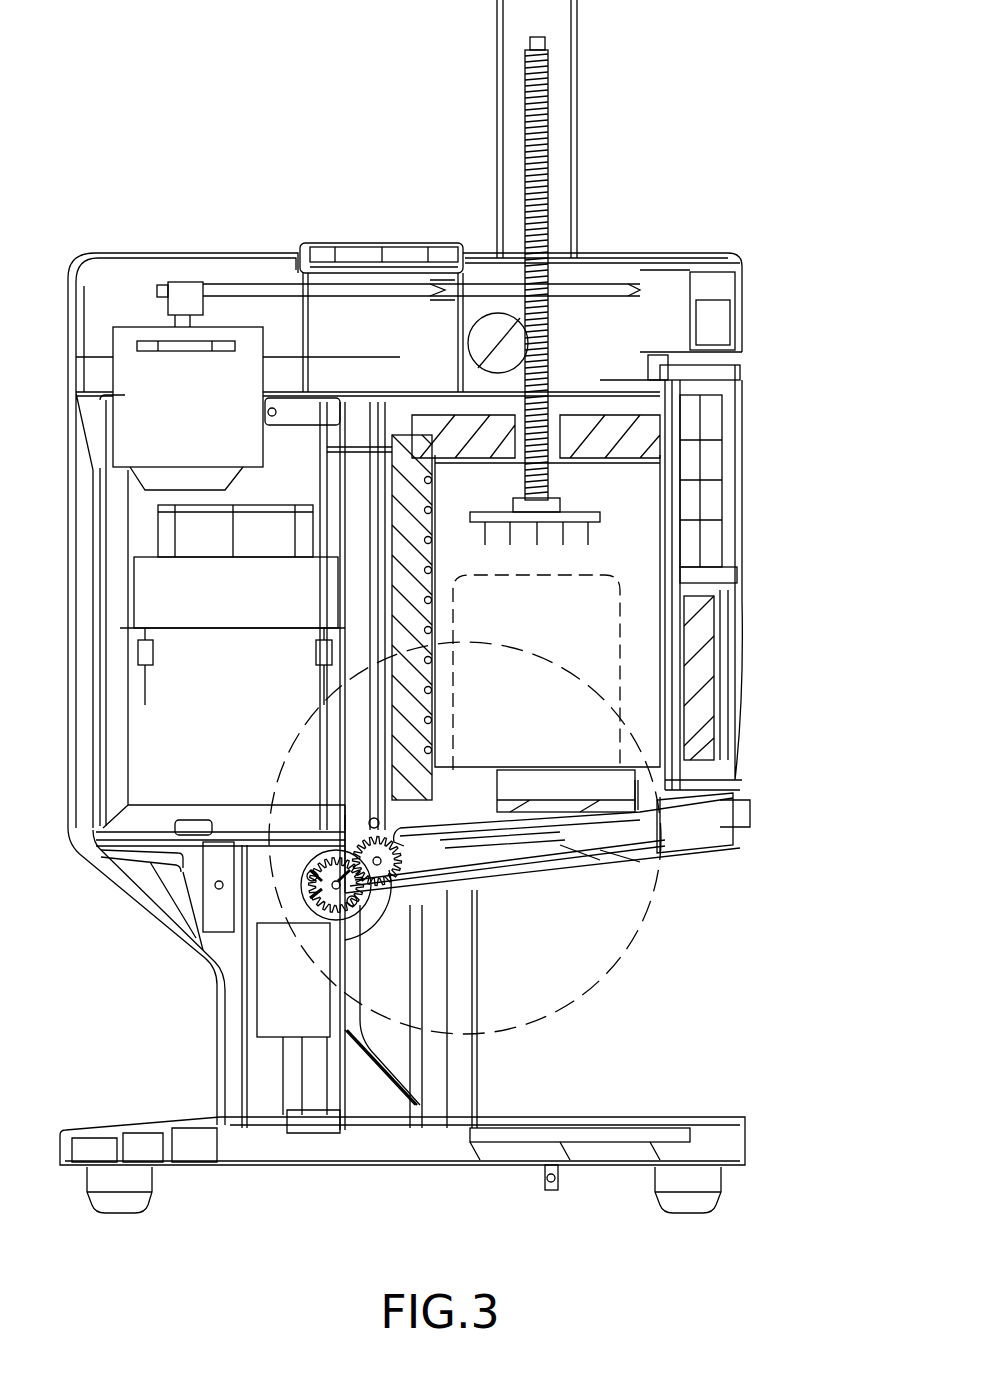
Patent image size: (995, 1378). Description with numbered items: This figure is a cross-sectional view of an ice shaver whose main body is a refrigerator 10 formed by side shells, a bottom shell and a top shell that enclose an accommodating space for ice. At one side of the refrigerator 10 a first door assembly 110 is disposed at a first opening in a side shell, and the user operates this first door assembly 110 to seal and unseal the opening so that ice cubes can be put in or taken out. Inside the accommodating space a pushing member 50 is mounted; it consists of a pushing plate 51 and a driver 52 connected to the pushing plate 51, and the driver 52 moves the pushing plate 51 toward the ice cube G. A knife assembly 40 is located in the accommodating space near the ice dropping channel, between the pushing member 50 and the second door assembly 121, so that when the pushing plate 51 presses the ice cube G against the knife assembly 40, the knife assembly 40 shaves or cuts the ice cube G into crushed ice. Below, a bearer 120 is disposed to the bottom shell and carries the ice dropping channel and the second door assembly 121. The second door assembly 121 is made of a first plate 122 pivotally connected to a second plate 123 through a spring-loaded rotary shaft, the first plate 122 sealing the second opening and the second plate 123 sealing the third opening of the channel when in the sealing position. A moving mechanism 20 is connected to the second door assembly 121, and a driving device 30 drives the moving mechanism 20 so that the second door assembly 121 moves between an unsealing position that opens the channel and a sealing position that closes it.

The refrigerator 10 is at (692, 250).
The first door assembly 110 is at (740, 410).
The pushing member 50 is at (666, 492).
The pushing plate 51 is at (600, 526).
The driver 52 is at (550, 483).
The ice cube G is at (594, 637).
The knife assembly 40 is at (592, 770).
The driving device 30 is at (312, 855).
The moving mechanism 20 is at (448, 842).
The bearer 120 is at (606, 871).
The second door assembly 121 is at (584, 880).
The first plate 122 is at (645, 843).
The second plate 123 is at (580, 862).